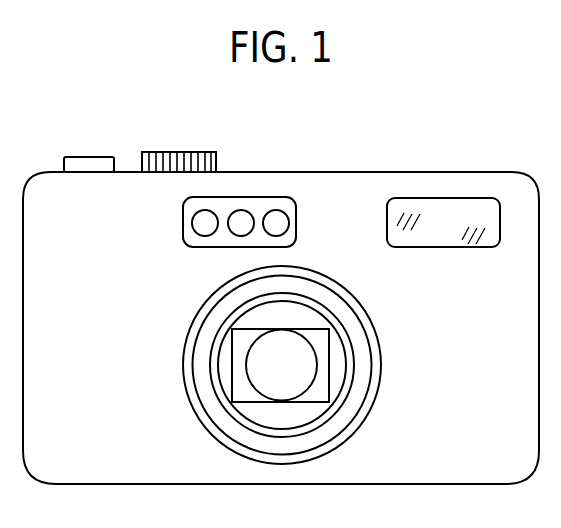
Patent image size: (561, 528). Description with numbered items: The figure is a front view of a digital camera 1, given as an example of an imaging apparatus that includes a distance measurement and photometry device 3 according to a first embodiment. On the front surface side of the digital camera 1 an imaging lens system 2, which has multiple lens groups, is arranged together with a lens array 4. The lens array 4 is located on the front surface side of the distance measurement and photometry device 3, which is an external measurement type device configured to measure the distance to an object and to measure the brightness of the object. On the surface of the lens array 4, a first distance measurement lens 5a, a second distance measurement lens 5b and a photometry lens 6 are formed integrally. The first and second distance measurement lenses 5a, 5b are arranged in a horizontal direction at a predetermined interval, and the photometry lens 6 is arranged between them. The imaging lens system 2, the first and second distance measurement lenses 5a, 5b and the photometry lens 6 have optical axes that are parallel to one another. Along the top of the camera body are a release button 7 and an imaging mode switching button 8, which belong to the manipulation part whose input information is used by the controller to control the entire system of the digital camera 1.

The digital camera 1 is at (469, 139).
The imaging lens system 2 is at (298, 367).
The distance measurement and photometry device 3 is at (303, 203).
The lens array 4 is at (222, 197).
The first distance measurement lens 5a is at (192, 223).
The second distance measurement lens 5b is at (289, 223).
The photometry lens 6 is at (243, 211).
The release button 7 is at (90, 157).
The imaging mode switching button 8 is at (181, 152).